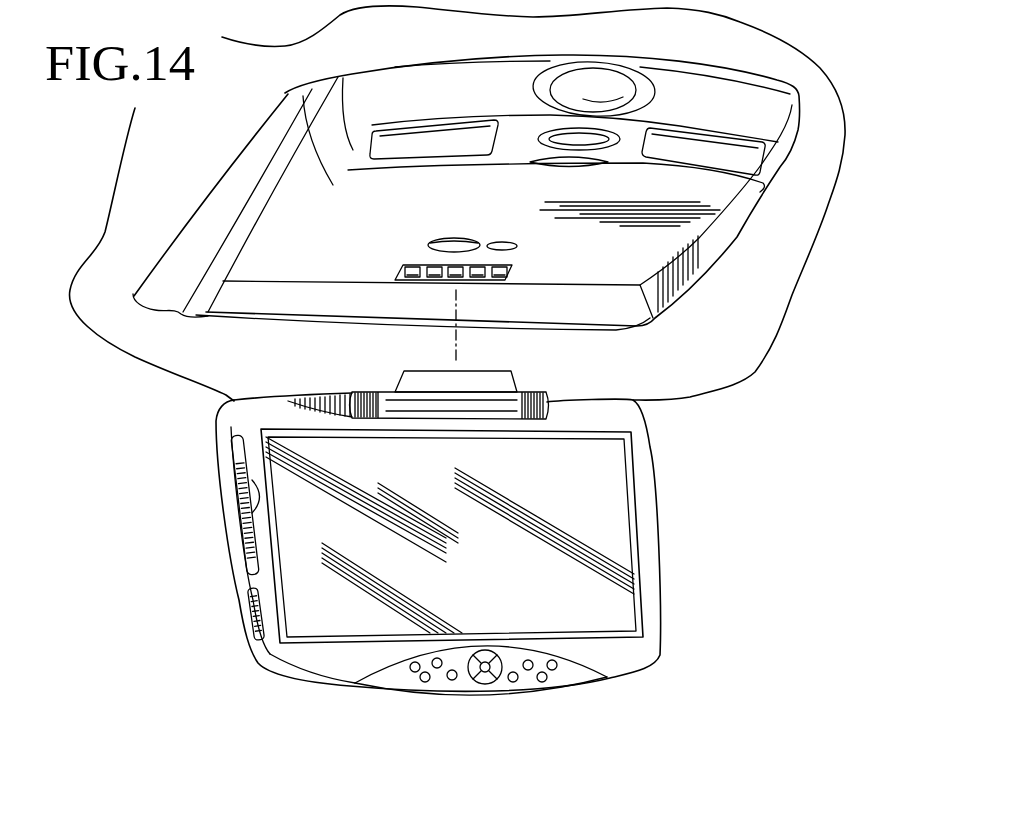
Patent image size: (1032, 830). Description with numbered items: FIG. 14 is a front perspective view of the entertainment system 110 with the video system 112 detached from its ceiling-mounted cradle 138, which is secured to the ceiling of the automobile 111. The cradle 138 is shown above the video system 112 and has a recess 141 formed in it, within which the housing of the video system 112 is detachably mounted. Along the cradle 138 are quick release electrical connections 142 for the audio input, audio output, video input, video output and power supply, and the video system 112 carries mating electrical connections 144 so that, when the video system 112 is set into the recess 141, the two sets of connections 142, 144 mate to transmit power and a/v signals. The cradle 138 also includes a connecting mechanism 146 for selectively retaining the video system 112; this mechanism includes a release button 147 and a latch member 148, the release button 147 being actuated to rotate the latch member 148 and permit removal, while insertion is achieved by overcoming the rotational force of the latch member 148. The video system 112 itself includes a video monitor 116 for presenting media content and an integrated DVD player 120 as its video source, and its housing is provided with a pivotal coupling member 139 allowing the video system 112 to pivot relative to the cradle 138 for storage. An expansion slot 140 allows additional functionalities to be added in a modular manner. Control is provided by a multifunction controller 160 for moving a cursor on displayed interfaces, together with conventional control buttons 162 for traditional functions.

The entertainment system 110 is at (827, 205).
The automobile 111 is at (399, 49).
The video system 112 is at (645, 565).
The video monitor 116 is at (622, 603).
The DVD player 120 is at (247, 547).
The cradle 138 is at (232, 191).
The pivotal coupling member 139 is at (462, 410).
The expansion slot 140 is at (256, 614).
The recess 141 is at (653, 182).
The quick release electrical connections 142 is at (406, 268).
The mating electrical connections 144 is at (491, 379).
The connecting mechanism 146 is at (422, 239).
The release button 147 is at (501, 243).
The latch member 148 is at (460, 244).
The multifunction controller 160 is at (488, 682).
The control buttons 162 is at (454, 681).